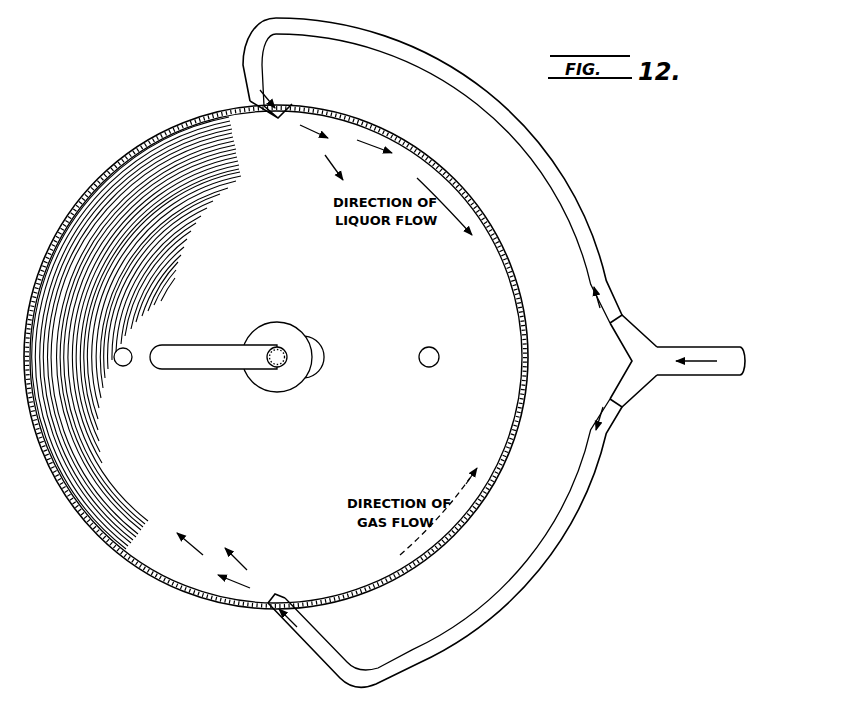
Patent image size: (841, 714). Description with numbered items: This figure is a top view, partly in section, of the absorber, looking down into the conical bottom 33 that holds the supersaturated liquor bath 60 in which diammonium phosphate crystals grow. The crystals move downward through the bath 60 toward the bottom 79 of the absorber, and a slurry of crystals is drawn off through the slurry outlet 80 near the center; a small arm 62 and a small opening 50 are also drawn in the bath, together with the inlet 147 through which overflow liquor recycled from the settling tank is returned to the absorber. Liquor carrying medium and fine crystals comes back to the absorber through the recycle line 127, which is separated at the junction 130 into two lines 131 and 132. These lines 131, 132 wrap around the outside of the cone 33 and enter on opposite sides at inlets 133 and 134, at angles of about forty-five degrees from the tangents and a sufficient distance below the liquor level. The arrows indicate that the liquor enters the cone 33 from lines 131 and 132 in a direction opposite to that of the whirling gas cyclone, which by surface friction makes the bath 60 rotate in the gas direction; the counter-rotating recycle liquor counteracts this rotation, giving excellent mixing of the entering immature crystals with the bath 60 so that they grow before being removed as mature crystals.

The conical bottom 33 is at (134, 562).
The drain opening 50 is at (118, 366).
The bath 60 is at (346, 289).
The shaft arm 62 is at (217, 369).
The bottom 79 is at (263, 391).
The slurry outlet 80 is at (312, 376).
The recycle line 127 is at (686, 345).
The separation point 130 is at (622, 356).
The line 131 is at (430, 630).
The line 132 is at (523, 128).
The inlet 133 is at (288, 104).
The inlet 134 is at (268, 608).
The inlet 147 is at (438, 360).